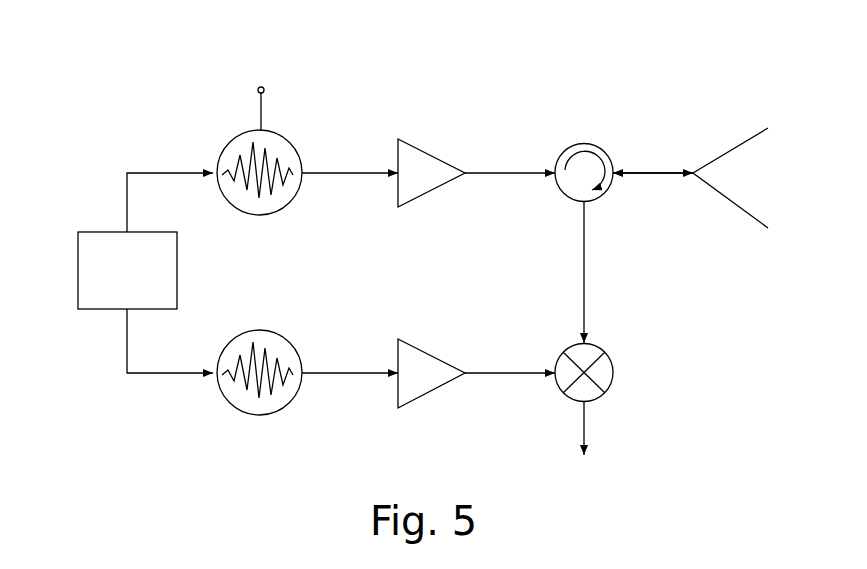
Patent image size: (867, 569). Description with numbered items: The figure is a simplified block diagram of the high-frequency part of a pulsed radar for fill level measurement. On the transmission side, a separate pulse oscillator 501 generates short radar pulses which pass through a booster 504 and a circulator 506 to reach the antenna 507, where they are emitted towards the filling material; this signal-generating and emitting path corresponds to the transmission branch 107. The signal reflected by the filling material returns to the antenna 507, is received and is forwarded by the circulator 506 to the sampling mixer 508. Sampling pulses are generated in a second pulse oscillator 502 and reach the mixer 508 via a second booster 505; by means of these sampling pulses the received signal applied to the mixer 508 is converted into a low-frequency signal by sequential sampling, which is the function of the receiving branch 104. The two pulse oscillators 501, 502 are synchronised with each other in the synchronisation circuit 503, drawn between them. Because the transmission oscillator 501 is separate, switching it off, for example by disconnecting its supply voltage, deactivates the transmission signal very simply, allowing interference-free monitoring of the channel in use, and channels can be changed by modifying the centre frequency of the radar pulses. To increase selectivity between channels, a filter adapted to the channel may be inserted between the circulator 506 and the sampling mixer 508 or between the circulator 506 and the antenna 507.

The transmission branch 107 is at (140, 150).
The receiving branch 104 is at (203, 413).
The synchronisation circuit 503 is at (76, 240).
The pulse oscillator 501 is at (225, 145).
The pulse oscillator 502 is at (280, 415).
The booster 504 is at (397, 140).
The booster 505 is at (428, 392).
The circulator 506 is at (558, 158).
The antenna 507 is at (720, 157).
The sampling mixer 508 is at (612, 387).